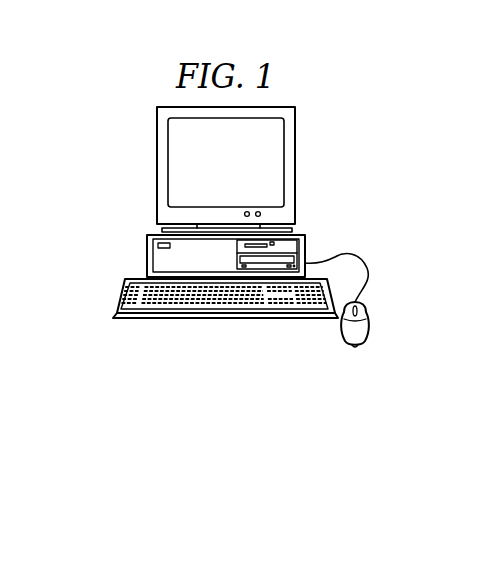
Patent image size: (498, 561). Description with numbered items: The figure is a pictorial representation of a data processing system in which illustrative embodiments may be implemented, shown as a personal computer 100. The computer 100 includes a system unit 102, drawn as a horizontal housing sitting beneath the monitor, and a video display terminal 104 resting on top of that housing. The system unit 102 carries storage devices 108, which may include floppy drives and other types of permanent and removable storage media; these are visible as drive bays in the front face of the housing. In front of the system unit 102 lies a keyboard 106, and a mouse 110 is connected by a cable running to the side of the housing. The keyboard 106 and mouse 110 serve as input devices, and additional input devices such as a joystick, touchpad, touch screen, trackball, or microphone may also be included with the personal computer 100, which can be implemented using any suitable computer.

The computer 100 is at (99, 153).
The system unit 102 is at (147, 256).
The video display terminal 104 is at (295, 164).
The keyboard 106 is at (140, 318).
The storage devices 108 is at (305, 250).
The mouse 110 is at (355, 346).